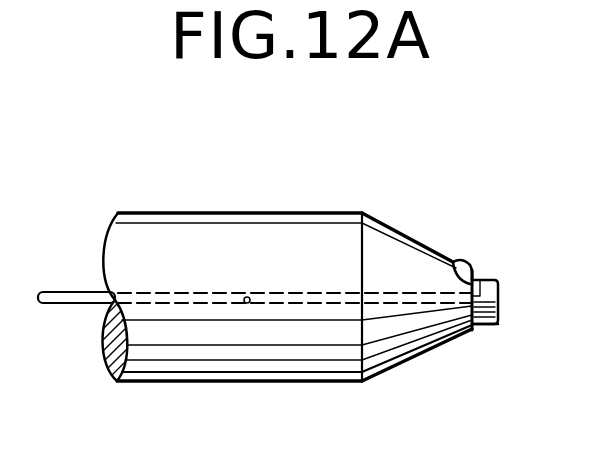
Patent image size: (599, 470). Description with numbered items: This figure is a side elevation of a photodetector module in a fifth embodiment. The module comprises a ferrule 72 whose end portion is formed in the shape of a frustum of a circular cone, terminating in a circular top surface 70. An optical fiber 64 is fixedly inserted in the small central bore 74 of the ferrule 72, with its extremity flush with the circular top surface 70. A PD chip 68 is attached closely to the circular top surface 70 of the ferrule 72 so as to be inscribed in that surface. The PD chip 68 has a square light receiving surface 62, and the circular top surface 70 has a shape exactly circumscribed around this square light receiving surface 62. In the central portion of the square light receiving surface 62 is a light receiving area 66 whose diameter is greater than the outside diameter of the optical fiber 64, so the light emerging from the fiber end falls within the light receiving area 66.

The square light receiving surface 62 is at (456, 262).
The optical fiber 64 is at (68, 305).
The light receiving area 66 is at (481, 293).
The PD chip 68 is at (495, 273).
The circular top surface 70 is at (478, 328).
The ferrule 72 is at (227, 213).
The small central bore 74 is at (246, 306).